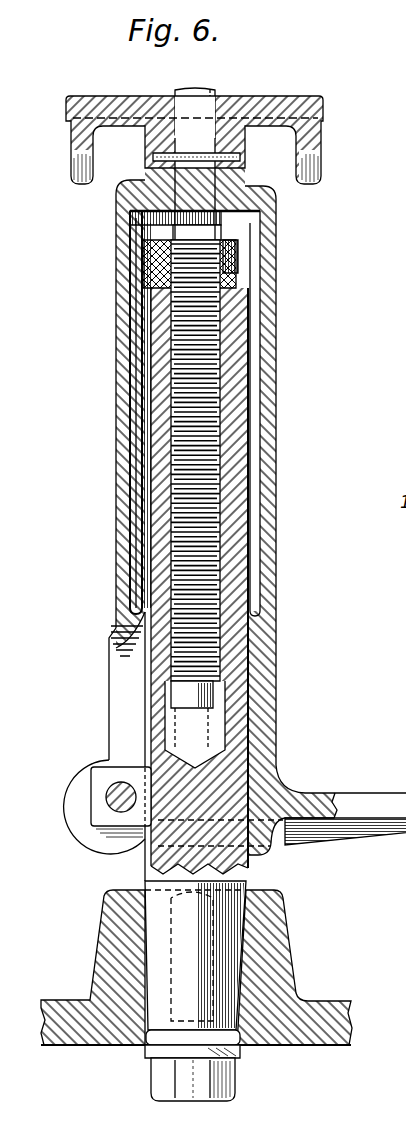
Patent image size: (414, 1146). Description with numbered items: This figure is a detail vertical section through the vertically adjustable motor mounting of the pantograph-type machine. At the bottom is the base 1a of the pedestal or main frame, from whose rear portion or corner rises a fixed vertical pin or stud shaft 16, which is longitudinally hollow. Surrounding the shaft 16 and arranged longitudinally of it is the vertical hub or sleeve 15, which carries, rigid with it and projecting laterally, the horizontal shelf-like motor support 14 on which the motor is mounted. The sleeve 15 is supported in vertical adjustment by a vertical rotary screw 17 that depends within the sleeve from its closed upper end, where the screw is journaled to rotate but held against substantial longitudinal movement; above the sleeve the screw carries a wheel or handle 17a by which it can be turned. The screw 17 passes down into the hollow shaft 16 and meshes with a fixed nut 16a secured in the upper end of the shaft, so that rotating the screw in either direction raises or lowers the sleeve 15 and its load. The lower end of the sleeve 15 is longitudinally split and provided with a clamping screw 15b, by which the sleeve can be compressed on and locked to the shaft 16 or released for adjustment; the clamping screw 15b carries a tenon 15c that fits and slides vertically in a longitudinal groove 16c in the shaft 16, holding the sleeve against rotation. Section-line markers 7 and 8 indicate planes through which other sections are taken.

The base 1a is at (303, 993).
The section line 7- 7 is at (318, 227).
The section line 8- 8 is at (316, 780).
The motor support 14 is at (413, 786).
The sleeve 15 is at (273, 460).
The clamping screw 15b is at (103, 798).
The tenon 15c is at (100, 768).
The pin or stud shaft 16 is at (238, 513).
The fixed nut 16a is at (150, 258).
The longitudinal groove 16c is at (150, 692).
The screw 17 is at (208, 335).
The wheel or handle 17a is at (300, 108).